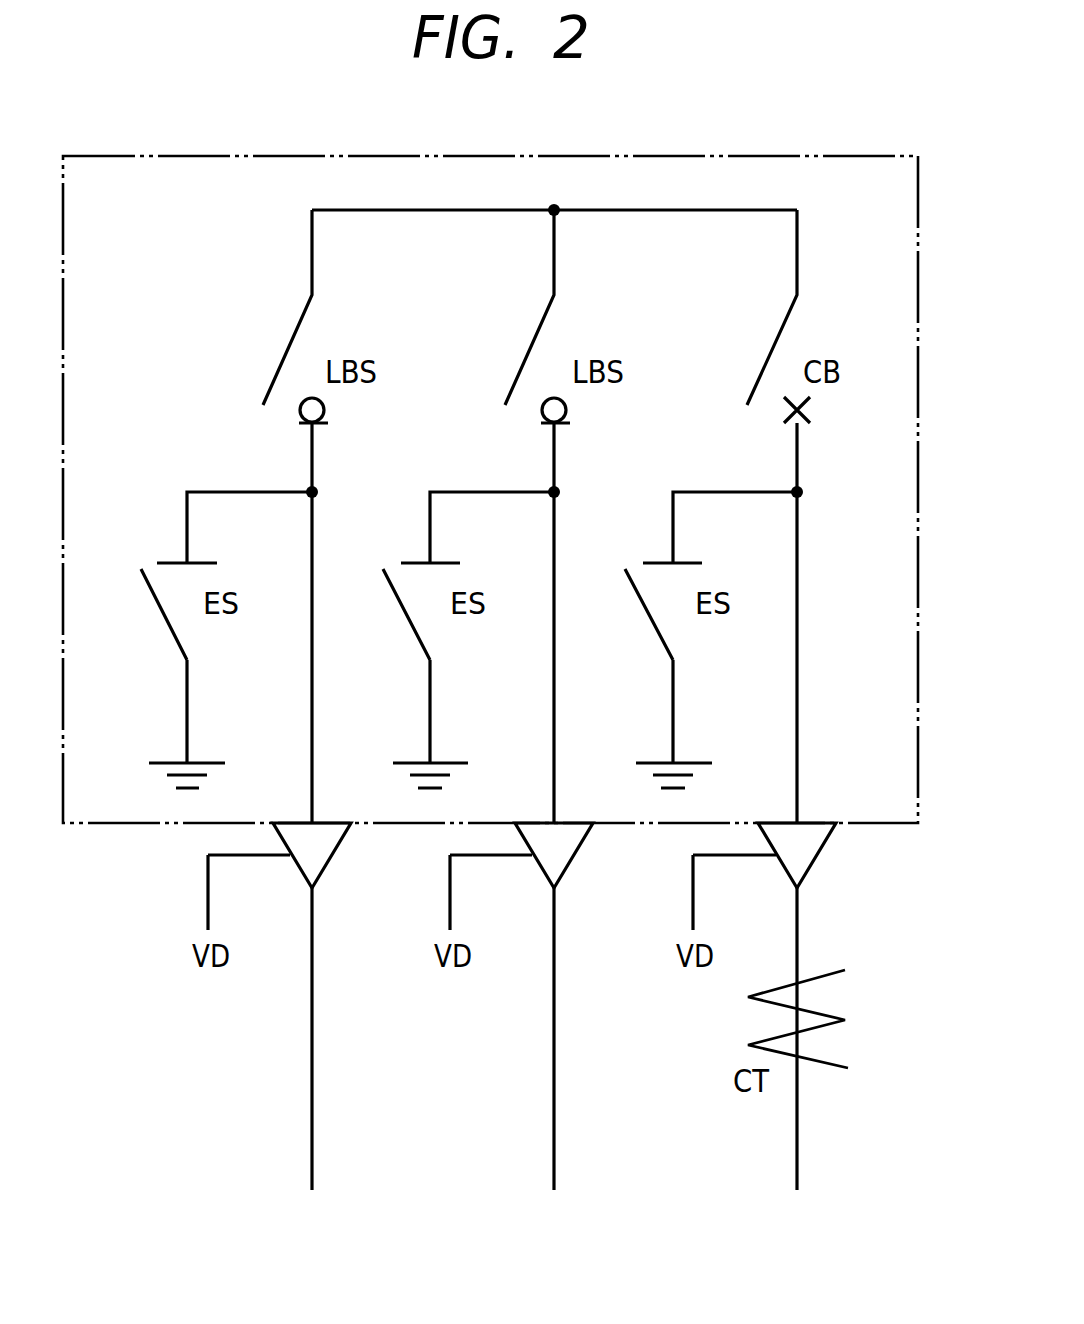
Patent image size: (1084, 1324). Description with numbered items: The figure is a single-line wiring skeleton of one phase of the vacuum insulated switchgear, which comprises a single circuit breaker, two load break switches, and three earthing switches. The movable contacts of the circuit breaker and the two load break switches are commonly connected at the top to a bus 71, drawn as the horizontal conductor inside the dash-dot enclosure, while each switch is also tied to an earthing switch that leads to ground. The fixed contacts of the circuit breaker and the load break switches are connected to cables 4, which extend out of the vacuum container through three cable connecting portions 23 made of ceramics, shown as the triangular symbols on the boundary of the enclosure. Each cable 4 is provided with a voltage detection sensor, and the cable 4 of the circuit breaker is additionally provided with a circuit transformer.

The bus 71 is at (743, 210).
The cable connecting portion 23 is at (827, 843).
The cable 4 is at (312, 1128).